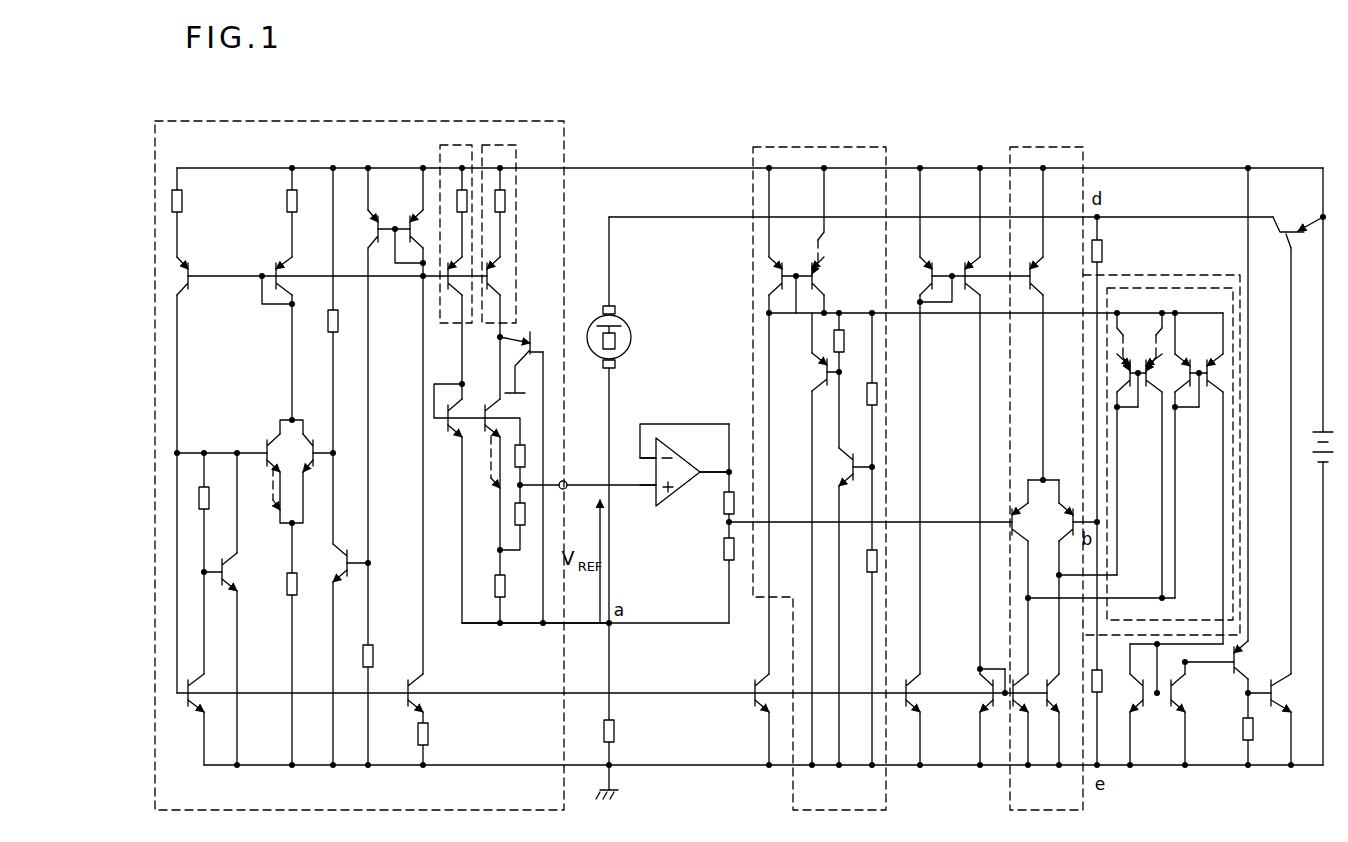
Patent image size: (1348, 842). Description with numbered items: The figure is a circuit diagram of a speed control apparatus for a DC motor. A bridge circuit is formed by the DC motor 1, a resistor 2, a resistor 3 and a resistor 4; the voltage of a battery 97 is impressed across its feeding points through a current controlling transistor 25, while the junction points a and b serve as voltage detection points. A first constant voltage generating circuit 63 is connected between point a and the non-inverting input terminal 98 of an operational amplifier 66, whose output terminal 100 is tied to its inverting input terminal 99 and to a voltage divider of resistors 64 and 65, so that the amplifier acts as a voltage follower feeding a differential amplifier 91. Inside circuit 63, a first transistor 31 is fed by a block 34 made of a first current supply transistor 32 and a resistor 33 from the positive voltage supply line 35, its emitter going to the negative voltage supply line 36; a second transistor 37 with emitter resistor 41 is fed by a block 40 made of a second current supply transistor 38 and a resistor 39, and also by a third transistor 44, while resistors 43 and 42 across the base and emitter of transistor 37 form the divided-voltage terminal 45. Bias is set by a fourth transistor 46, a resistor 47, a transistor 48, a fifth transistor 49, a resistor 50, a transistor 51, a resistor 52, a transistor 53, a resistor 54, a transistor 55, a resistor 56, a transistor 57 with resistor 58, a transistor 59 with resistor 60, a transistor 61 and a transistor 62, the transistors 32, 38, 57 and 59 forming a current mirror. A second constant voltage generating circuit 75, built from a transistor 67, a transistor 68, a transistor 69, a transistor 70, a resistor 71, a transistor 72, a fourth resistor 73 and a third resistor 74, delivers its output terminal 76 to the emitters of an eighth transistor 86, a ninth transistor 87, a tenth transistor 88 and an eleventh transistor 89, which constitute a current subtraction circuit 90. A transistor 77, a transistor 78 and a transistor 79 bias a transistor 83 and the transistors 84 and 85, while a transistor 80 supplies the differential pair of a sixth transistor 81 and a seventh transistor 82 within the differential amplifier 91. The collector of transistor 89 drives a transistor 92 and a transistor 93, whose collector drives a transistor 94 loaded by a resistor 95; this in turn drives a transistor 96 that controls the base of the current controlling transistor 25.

The DC motor 1 is at (618, 326).
The resistor 2 is at (615, 733).
The resistor 3 is at (1103, 250).
The resistor 4 is at (1103, 680).
The current controlling transistor 25 is at (1288, 236).
The first transistor 31 is at (448, 432).
The first current supply transistor 32 is at (450, 300).
The resistor 33 is at (457, 200).
The block 34 is at (455, 145).
The positive voltage supply line 35 is at (640, 168).
The negative voltage supply line 36 is at (518, 625).
The second transistor 37 is at (488, 462).
The second current supply transistor 38 is at (490, 276).
The resistor 39 is at (506, 205).
The block 40 is at (495, 145).
The resistor 41 is at (494, 587).
The resistor 42 is at (526, 515).
The resistor 43 is at (526, 457).
The third transistor 44 is at (528, 335).
The divided-voltage terminal 45 is at (566, 481).
The fourth transistor 46 is at (186, 700).
The resistor 47 is at (210, 497).
The transistor 48 is at (226, 576).
The fifth transistor 49 is at (266, 442).
The resistor 50 is at (287, 578).
The transistor 51 is at (313, 438).
The resistor 52 is at (328, 328).
The transistor 53 is at (345, 565).
The resistor 54 is at (374, 655).
The transistor 55 is at (414, 690).
The resistor 56 is at (429, 734).
The transistor 57 is at (190, 262).
The resistor 58 is at (183, 200).
The transistor 59 is at (278, 262).
The resistor 60 is at (286, 200).
The transistor 61 is at (376, 229).
The transistor 62 is at (410, 222).
The first constant voltage generating circuit 63 is at (412, 810).
The resistor 64 is at (723, 507).
The resistor 65 is at (723, 552).
The operational amplifier 66 is at (690, 455).
The transistor 67 is at (760, 708).
The transistor 68 is at (780, 280).
The transistor 69 is at (814, 248).
The transistor 70 is at (820, 372).
The resistor 71 is at (845, 345).
The transistor 72 is at (850, 465).
The fourth resistor 73 is at (878, 395).
The third resistor 74 is at (866, 570).
The second constant voltage generating circuit 75 is at (805, 147).
The output terminal 76 is at (870, 313).
The transistor 77 is at (908, 680).
The transistor 78 is at (925, 285).
The transistor 79 is at (968, 262).
The transistor 80 is at (1036, 268).
The sixth transistor 81 is at (1020, 522).
The seventh transistor 82 is at (1068, 508).
The transistor 83 is at (990, 692).
The transistor 84 is at (1016, 690).
The transistor 85 is at (1052, 710).
The eighth transistor 86 is at (1124, 404).
The ninth transistor 87 is at (1156, 400).
The tenth transistor 88 is at (1190, 360).
The eleventh transistor 89 is at (1210, 400).
The current subtraction circuit 90 is at (1130, 288).
The differential amplifier 91 is at (1035, 147).
The transistor 92 is at (1140, 690).
The transistor 93 is at (1172, 706).
The transistor 94 is at (1236, 665).
The resistor 95 is at (1242, 730).
The transistor 96 is at (1280, 680).
The battery 97 is at (1318, 432).
The non-inverting input terminal 98 is at (643, 496).
The inverting input terminal 99 is at (641, 468).
The output terminal 100 is at (714, 481).